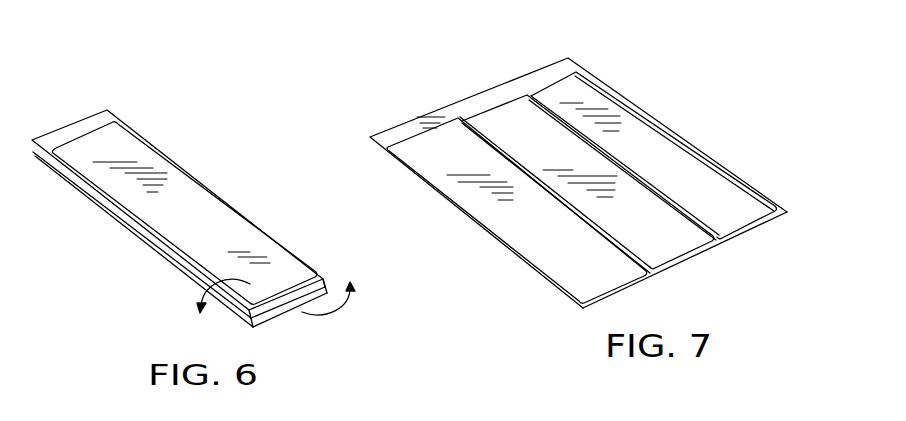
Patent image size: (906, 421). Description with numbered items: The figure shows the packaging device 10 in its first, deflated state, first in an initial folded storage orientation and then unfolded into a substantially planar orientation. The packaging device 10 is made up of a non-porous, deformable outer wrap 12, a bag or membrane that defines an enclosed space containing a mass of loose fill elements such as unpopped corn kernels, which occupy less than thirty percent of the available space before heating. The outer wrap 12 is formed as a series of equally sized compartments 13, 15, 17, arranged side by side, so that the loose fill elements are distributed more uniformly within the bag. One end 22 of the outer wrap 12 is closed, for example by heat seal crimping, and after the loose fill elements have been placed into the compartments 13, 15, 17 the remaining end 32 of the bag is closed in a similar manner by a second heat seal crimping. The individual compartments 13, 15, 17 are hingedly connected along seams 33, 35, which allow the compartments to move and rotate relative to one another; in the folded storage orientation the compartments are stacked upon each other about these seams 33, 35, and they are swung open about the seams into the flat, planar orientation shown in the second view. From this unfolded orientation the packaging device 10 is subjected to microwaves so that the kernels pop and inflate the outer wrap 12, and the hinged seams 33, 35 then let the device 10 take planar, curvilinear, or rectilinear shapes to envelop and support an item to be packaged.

In FIG. 6, the packaging device 10 is at (163, 118).
In FIG. 7, the packaging device 10 is at (625, 63).
In FIG. 6, the outer wrap 12 is at (193, 186).
In FIG. 7, the outer wrap 12 is at (645, 130).
In FIG. 7, the compartment 13 is at (680, 168).
In FIG. 7, the compartment 15 is at (510, 120).
In FIG. 6, the compartment 17 is at (163, 215).
In FIG. 7, the compartment 17 is at (507, 220).
In FIG. 6, the one end of the outer wrap 22 is at (280, 298).
In FIG. 7, the one end of the outer wrap 22 is at (689, 258).
In FIG. 6, the remaining end of the bag 32 is at (63, 135).
In FIG. 7, the remaining end of the bag 32 is at (475, 105).
In FIG. 6, the seam 33 is at (327, 285).
In FIG. 7, the seam 33 is at (683, 208).
In FIG. 6, the seam 35 is at (98, 193).
In FIG. 7, the seam 35 is at (582, 220).